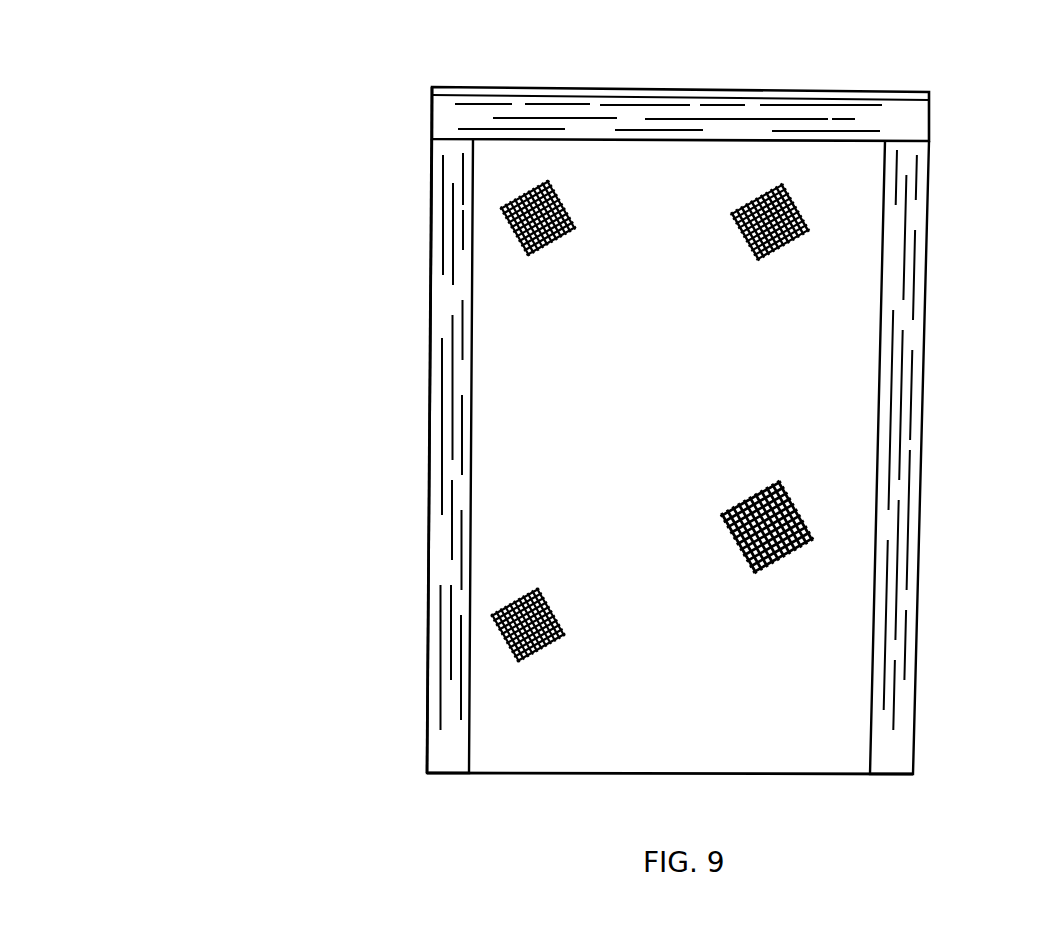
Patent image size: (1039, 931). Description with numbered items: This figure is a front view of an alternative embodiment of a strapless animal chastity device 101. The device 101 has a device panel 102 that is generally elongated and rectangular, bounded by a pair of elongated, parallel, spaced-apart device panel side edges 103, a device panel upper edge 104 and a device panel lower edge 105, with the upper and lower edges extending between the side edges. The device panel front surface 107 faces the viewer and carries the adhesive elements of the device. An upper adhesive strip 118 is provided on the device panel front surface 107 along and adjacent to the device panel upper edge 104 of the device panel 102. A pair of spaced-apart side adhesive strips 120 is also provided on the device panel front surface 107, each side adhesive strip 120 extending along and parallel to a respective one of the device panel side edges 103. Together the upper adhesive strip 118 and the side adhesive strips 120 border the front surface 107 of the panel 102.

The animal chastity device 101 is at (390, 76).
The device panel 102 is at (412, 279).
The device panel side edges 103 is at (674, 456).
The device panel upper edge 104 is at (777, 88).
The device panel lower edge 105 is at (572, 774).
The device panel front surface 107 is at (659, 414).
The upper adhesive strip 118 is at (615, 108).
The side adhesive strips 120 is at (440, 412).